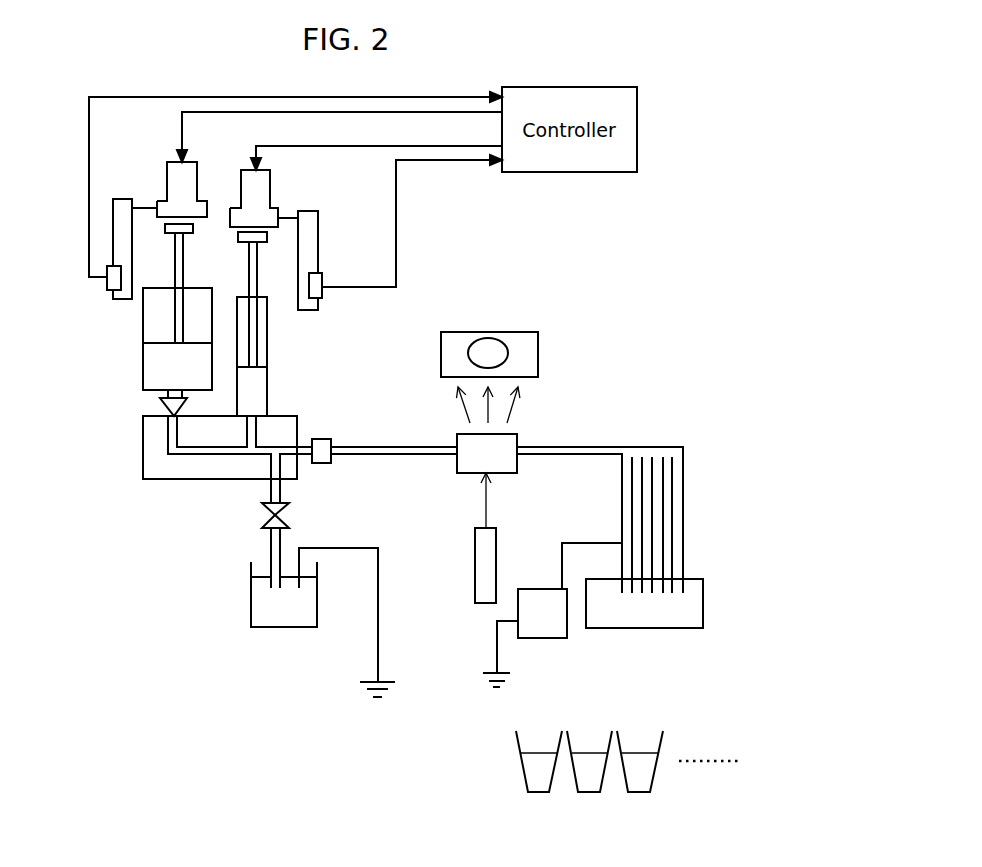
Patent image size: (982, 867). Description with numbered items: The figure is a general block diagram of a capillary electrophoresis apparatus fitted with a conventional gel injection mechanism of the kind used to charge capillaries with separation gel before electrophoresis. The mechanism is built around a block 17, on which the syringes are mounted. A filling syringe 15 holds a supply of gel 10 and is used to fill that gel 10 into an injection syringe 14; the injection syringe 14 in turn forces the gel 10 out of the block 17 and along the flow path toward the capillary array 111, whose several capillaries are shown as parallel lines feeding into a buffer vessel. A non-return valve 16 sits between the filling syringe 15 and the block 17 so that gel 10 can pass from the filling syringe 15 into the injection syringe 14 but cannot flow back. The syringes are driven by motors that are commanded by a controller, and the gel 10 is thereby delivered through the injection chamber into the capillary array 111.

The gel 10 is at (568, 447).
The injection syringe 14 is at (267, 392).
The filling syringe 15 is at (147, 367).
The non-return valve 16 is at (165, 407).
The block 17 is at (143, 455).
The capillary array 111 is at (657, 447).